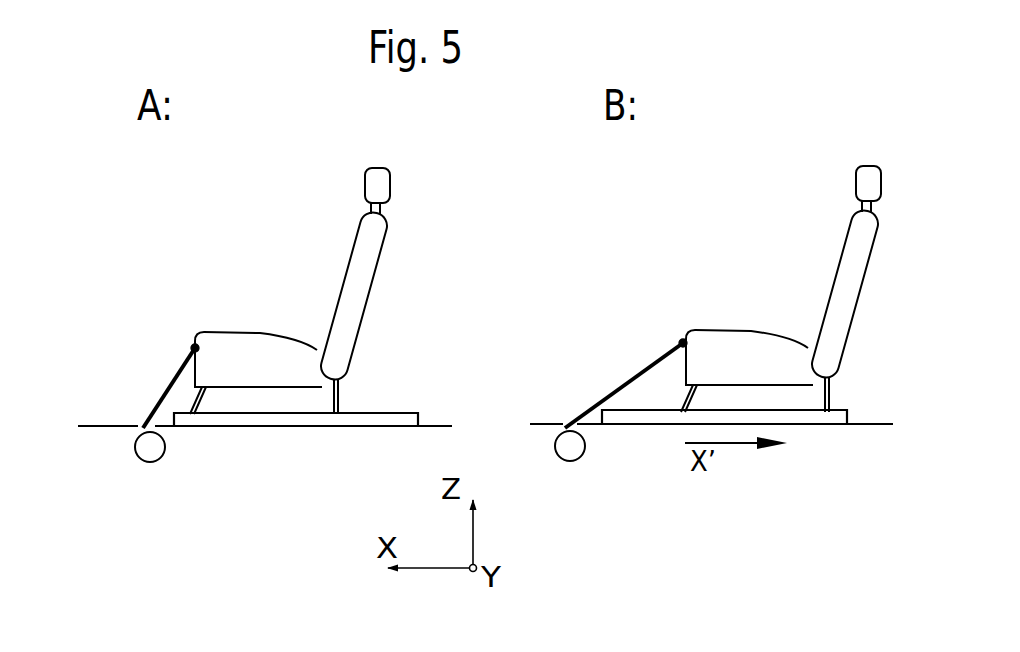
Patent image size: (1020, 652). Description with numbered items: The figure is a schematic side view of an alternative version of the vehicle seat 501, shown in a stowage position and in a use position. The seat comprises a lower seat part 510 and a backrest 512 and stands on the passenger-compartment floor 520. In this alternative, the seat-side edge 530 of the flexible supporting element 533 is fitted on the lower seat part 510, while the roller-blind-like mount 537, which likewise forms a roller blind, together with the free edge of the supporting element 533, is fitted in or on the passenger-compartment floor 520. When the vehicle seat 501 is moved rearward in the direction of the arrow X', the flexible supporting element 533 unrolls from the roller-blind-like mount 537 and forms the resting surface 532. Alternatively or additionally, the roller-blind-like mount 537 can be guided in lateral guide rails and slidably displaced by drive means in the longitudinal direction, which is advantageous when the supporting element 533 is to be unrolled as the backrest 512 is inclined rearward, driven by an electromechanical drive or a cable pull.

The vehicle seat 501 is at (535, 258).
The lower seat part 510 is at (233, 330).
The backrest 512 is at (343, 253).
The passenger-compartment floor 520 is at (97, 421).
The seat-side edge 530 is at (416, 325).
The resting surface 532 is at (652, 360).
The flexible supporting element 533 is at (402, 334).
The roller-blind-like mount 537 is at (166, 453).